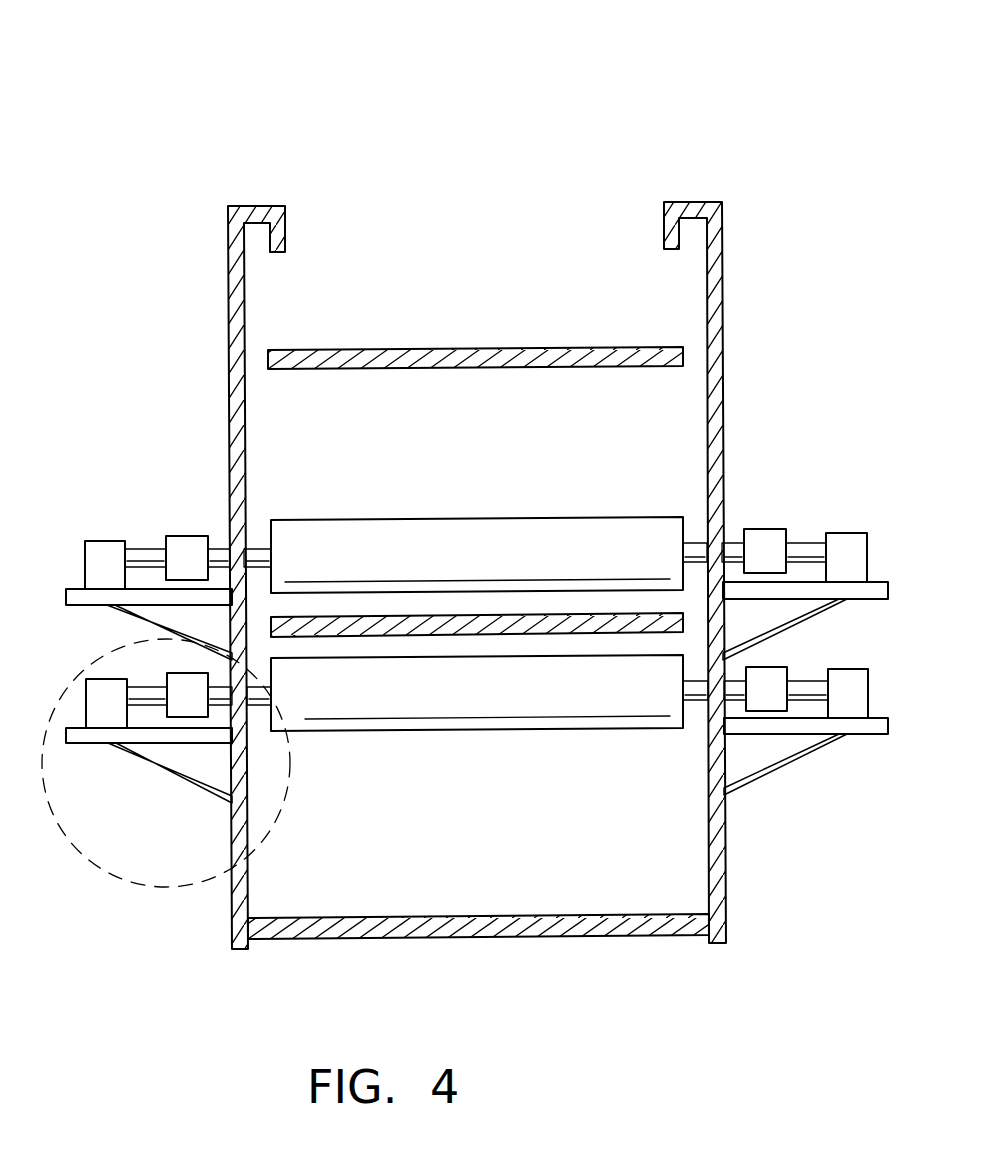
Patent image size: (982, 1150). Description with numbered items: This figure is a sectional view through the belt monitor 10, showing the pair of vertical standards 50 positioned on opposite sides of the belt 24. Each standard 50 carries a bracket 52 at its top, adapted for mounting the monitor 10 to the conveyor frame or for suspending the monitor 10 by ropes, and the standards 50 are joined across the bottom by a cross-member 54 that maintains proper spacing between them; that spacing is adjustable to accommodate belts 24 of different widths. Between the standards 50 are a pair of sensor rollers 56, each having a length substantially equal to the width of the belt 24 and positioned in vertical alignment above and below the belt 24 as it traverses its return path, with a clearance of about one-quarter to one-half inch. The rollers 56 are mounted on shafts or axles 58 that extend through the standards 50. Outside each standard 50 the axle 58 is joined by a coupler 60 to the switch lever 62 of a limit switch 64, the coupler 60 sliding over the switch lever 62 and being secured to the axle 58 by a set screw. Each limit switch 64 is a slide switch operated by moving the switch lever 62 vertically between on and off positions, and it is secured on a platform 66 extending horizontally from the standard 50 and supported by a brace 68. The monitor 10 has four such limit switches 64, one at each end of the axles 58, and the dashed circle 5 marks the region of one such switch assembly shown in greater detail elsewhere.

The monitor 10 is at (751, 124).
The detail region 5 is at (285, 800).
The belt 24 is at (433, 349).
The vertical standards 50 is at (228, 343).
The bracket 52 is at (285, 235).
The cross-member 54 is at (447, 917).
The sensor rollers 56 is at (363, 520).
The shafts or axles 58 is at (225, 548).
The coupler 60 is at (196, 536).
The switch lever 62 is at (155, 549).
The limit switch 64 is at (110, 541).
The platform 66 is at (85, 744).
The brace 68 is at (177, 783).